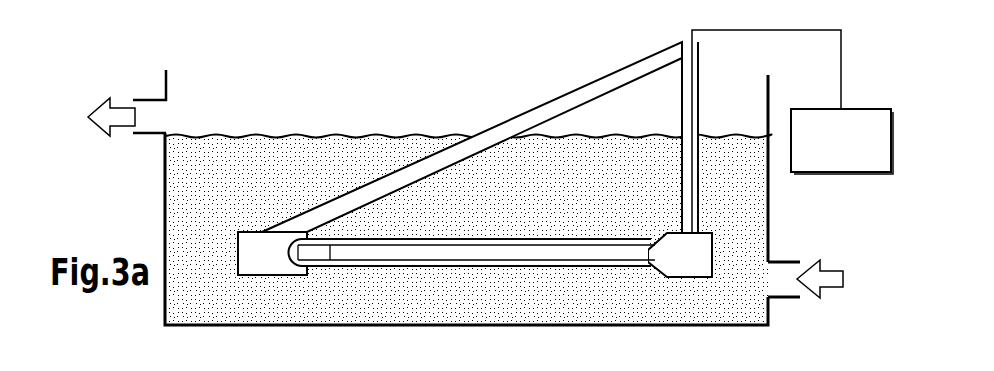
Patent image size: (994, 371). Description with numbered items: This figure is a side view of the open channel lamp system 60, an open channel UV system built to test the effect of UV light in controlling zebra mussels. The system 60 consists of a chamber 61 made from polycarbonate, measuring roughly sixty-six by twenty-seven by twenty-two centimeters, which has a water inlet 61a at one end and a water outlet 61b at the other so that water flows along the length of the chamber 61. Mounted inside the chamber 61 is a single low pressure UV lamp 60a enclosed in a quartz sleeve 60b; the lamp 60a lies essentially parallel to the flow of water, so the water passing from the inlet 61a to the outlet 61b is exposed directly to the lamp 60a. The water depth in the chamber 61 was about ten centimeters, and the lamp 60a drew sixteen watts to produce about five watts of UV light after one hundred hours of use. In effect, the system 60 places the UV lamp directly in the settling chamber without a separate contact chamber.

The open channel lamp system 60 is at (565, 200).
The low pressure UV lamp 60a is at (527, 266).
The quartz sleeve 60b is at (347, 266).
The chamber 61 is at (647, 328).
The water inlet 61a is at (778, 260).
The water outlet 61b is at (143, 100).